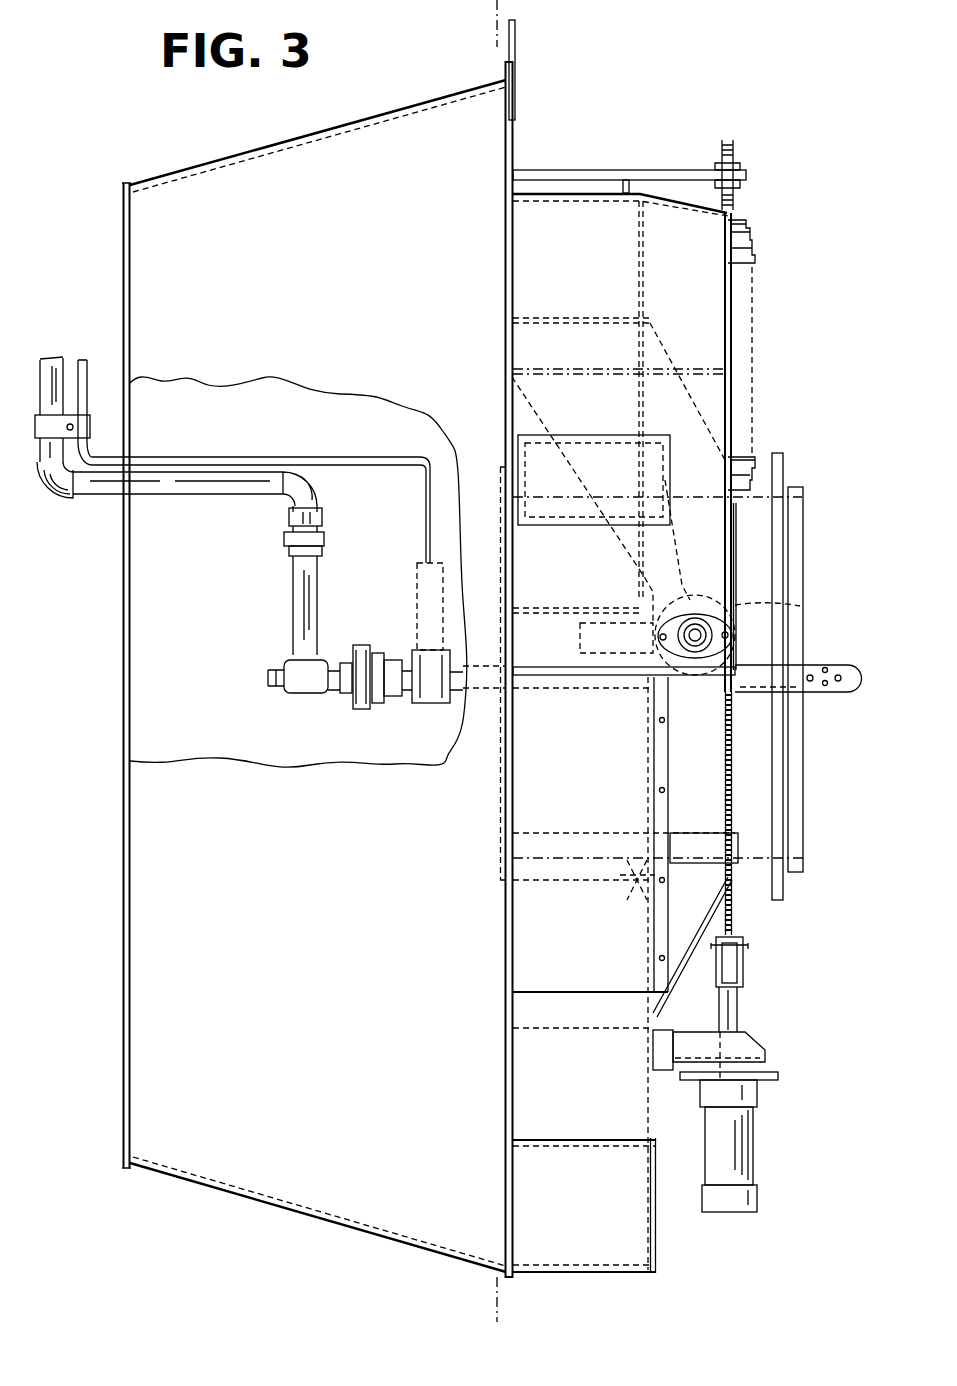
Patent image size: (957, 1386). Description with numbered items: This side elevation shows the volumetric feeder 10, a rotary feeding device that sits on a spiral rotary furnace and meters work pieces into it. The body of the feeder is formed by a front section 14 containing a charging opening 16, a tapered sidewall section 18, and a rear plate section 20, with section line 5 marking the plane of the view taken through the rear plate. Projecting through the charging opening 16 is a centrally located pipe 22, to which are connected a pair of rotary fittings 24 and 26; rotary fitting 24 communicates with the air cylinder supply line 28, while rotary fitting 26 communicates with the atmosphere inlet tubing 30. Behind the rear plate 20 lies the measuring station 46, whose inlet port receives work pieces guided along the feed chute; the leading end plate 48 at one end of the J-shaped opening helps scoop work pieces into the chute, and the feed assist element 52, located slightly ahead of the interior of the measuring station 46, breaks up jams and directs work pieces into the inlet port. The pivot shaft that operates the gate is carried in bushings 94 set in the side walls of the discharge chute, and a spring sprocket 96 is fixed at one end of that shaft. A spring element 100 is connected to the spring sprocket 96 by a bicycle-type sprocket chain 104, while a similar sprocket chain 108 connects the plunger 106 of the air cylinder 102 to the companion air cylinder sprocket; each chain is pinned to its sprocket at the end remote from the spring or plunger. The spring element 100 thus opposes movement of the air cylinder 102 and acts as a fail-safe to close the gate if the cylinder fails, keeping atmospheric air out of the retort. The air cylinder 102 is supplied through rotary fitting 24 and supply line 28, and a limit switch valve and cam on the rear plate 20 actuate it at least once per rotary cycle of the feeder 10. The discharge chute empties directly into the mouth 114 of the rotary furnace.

The section line 5- 5 is at (494, 10).
The volumetric feeder 10 is at (281, 624).
The front section 14 is at (121, 945).
The charging opening 16 is at (222, 652).
The tapered sidewall section 18 is at (245, 1198).
The rear plate section 20 is at (500, 1162).
The pipe 22 is at (444, 761).
The rotary fitting 24 is at (423, 696).
The rotary fitting 26 is at (360, 706).
The air cylinder supply line 28 is at (87, 372).
The atmosphere inlet tubing 30 is at (36, 377).
The measuring station 46 is at (668, 760).
The leading end plate 48 is at (600, 1199).
The feed assist element 52 is at (640, 890).
The bushing 94 is at (703, 610).
The spring sprocket 96 is at (797, 612).
The spring element 100 is at (752, 307).
The air cylinder 102 is at (752, 1148).
The sprocket chain 104 is at (738, 553).
The plunger 106 is at (740, 1017).
The sprocket chain 108 is at (735, 800).
The mouth 114 is at (776, 738).